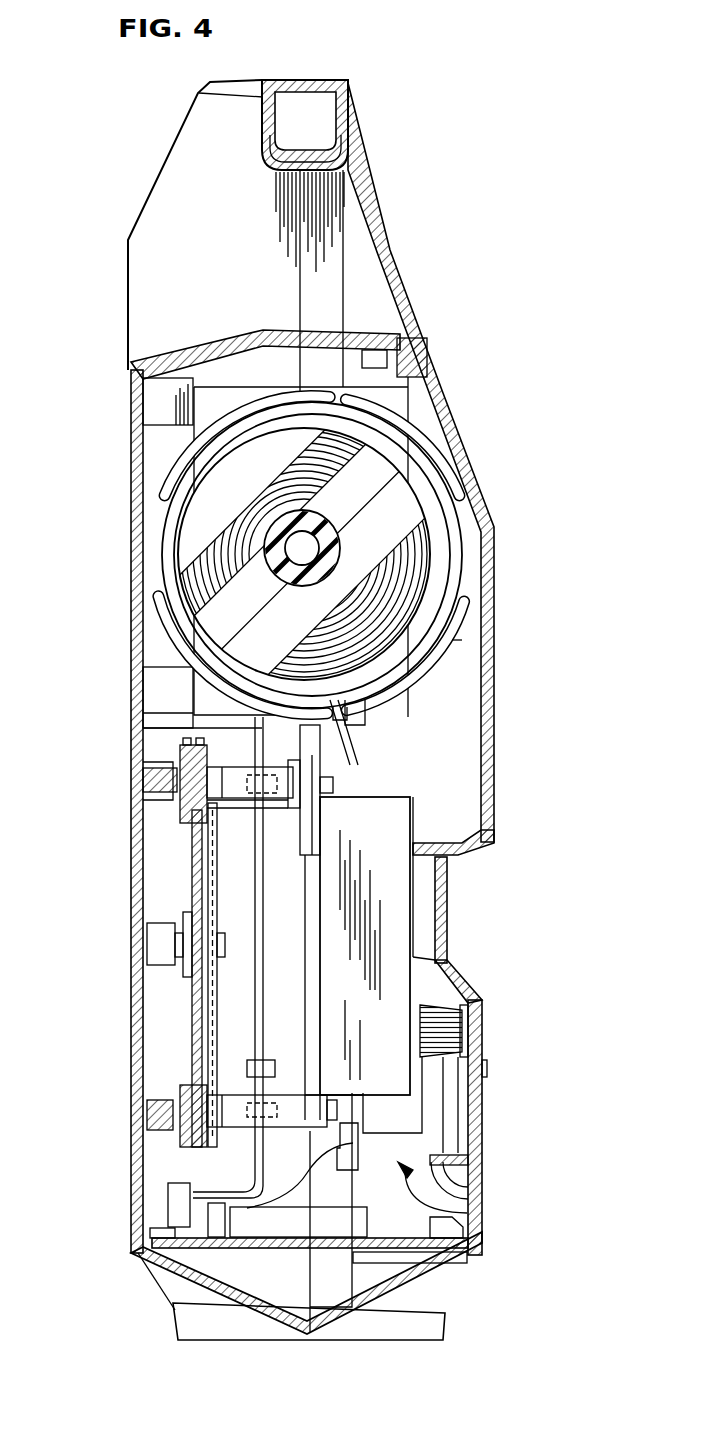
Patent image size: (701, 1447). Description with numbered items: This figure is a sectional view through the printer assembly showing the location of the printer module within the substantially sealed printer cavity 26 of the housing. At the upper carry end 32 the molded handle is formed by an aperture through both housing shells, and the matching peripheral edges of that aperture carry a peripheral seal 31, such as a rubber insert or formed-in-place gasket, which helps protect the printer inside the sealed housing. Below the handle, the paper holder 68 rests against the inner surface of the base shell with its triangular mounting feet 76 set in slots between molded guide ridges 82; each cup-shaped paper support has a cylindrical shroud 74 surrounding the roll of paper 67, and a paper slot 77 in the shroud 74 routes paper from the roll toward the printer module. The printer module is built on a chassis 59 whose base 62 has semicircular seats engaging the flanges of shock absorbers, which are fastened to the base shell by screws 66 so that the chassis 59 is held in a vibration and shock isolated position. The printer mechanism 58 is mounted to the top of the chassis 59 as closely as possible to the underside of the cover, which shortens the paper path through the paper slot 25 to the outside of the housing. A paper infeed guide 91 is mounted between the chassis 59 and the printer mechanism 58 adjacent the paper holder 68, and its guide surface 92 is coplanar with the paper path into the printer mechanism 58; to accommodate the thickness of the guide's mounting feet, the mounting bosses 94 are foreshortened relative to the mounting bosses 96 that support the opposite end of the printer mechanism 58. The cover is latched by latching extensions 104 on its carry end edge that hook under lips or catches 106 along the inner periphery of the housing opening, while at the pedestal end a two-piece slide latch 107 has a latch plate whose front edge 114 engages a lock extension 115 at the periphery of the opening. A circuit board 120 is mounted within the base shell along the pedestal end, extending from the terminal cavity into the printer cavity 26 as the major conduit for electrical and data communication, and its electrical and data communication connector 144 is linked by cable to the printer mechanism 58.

The peripheral seal 31 is at (300, 82).
The upper carry end 32 is at (340, 80).
The lips or catches 106 is at (370, 340).
The latching extensions 104 is at (413, 373).
The molded guide ridges 82 is at (160, 403).
The mounting feet 76 is at (167, 447).
The paper holder 68 is at (437, 460).
The roll of paper 67 is at (405, 537).
The cylindrical shroud 74 is at (452, 640).
The paper slot 77 is at (265, 733).
The paper infeed guide 91 is at (158, 740).
The printer cavity 26 is at (137, 750).
The guide surface 92 is at (312, 740).
The screws 66 is at (187, 826).
The mounting bosses 94 is at (212, 812).
The chassis 59 is at (200, 872).
The base of the chassis 62 is at (205, 892).
The paper slot 25 is at (449, 858).
The printer mechanism 58 is at (405, 930).
The mounting bosses 96 is at (240, 1095).
The front edge of the latch plate 114 is at (484, 1178).
The lock extension 115 is at (484, 1190).
The two-piece slide latch 107 is at (483, 1213).
The electrical and data communication connector 144 is at (138, 1253).
The circuit board 120 is at (233, 1248).